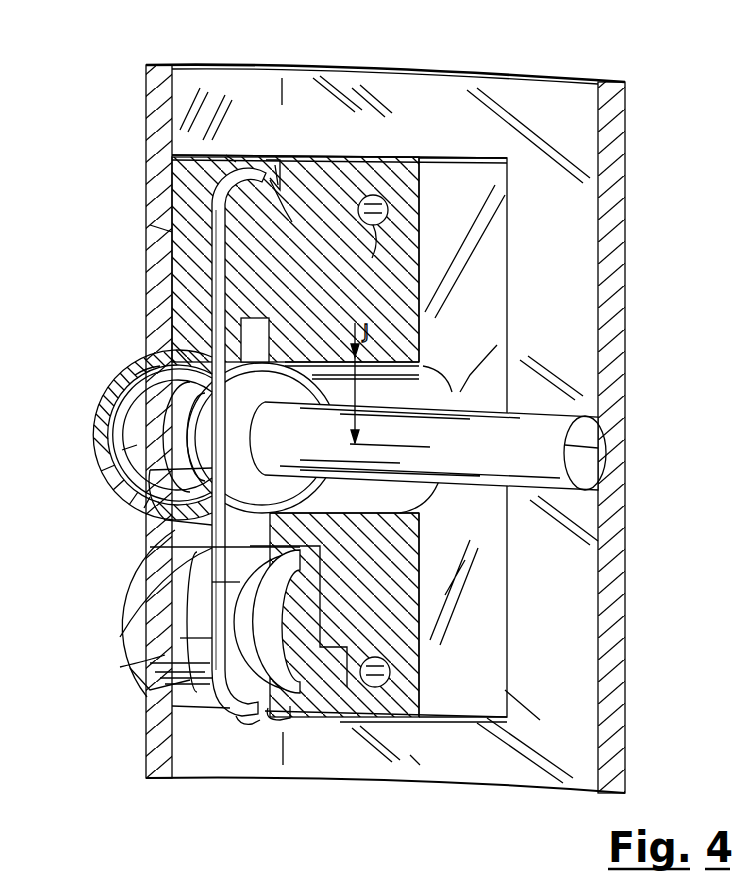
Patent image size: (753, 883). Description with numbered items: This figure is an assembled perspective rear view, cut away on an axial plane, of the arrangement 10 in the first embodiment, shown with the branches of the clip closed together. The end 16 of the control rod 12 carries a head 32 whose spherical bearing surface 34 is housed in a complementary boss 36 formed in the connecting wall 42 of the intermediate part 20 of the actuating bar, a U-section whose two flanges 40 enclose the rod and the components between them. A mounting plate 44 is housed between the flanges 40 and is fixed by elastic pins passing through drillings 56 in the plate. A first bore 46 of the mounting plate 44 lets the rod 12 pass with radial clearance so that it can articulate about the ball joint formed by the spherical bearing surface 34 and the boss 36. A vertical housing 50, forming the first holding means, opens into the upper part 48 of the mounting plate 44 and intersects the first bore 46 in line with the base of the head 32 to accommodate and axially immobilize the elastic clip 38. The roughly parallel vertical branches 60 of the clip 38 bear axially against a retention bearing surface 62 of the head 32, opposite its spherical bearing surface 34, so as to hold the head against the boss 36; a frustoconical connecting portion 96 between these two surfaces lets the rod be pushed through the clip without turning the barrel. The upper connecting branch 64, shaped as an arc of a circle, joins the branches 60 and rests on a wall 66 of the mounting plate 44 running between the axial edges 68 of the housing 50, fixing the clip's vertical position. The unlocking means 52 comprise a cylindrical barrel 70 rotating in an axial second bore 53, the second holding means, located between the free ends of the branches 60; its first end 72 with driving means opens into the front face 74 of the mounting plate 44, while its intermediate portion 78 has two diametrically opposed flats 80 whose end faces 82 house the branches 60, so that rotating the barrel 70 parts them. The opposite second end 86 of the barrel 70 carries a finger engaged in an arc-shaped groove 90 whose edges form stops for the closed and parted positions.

The arrangement 10 is at (568, 35).
The control rod 12 is at (512, 448).
The end of the control rod 16 is at (264, 415).
The intermediate part of the actuating bar 20 is at (146, 100).
The head 32 is at (100, 452).
The spherical bearing surface 34 is at (100, 415).
The boss 36 is at (110, 388).
The elastic clip 38 is at (270, 292).
The flanges 40 is at (557, 128).
The connecting wall 42 is at (197, 90).
The mounting plate 44 is at (497, 260).
The first bore 46 is at (497, 345).
The upper part of the mounting plate 48 is at (395, 157).
The vertical housing 50 is at (262, 712).
The unlocking means 52 is at (110, 608).
The axial second bore 53 is at (225, 542).
The drillings in the mounting plate 56 is at (373, 228).
The vertical branches 60 is at (190, 328).
The retention bearing surface 62 is at (240, 468).
The upper connecting branch 64 is at (261, 170).
The wall of the mounting plate 66 is at (313, 262).
The axial edges of the housing 68 is at (220, 157).
The cylindrical barrel 70 is at (130, 668).
The first end of the barrel 72 is at (165, 655).
The front face of the mounting plate 74 is at (172, 222).
The intermediate portion of the barrel 78 is at (238, 582).
The flats 80 is at (228, 722).
The end faces of the flats 82 is at (210, 638).
The second end of the barrel 86 is at (300, 700).
The groove 90 is at (343, 637).
The frustoconical connecting portion 96 is at (137, 445).